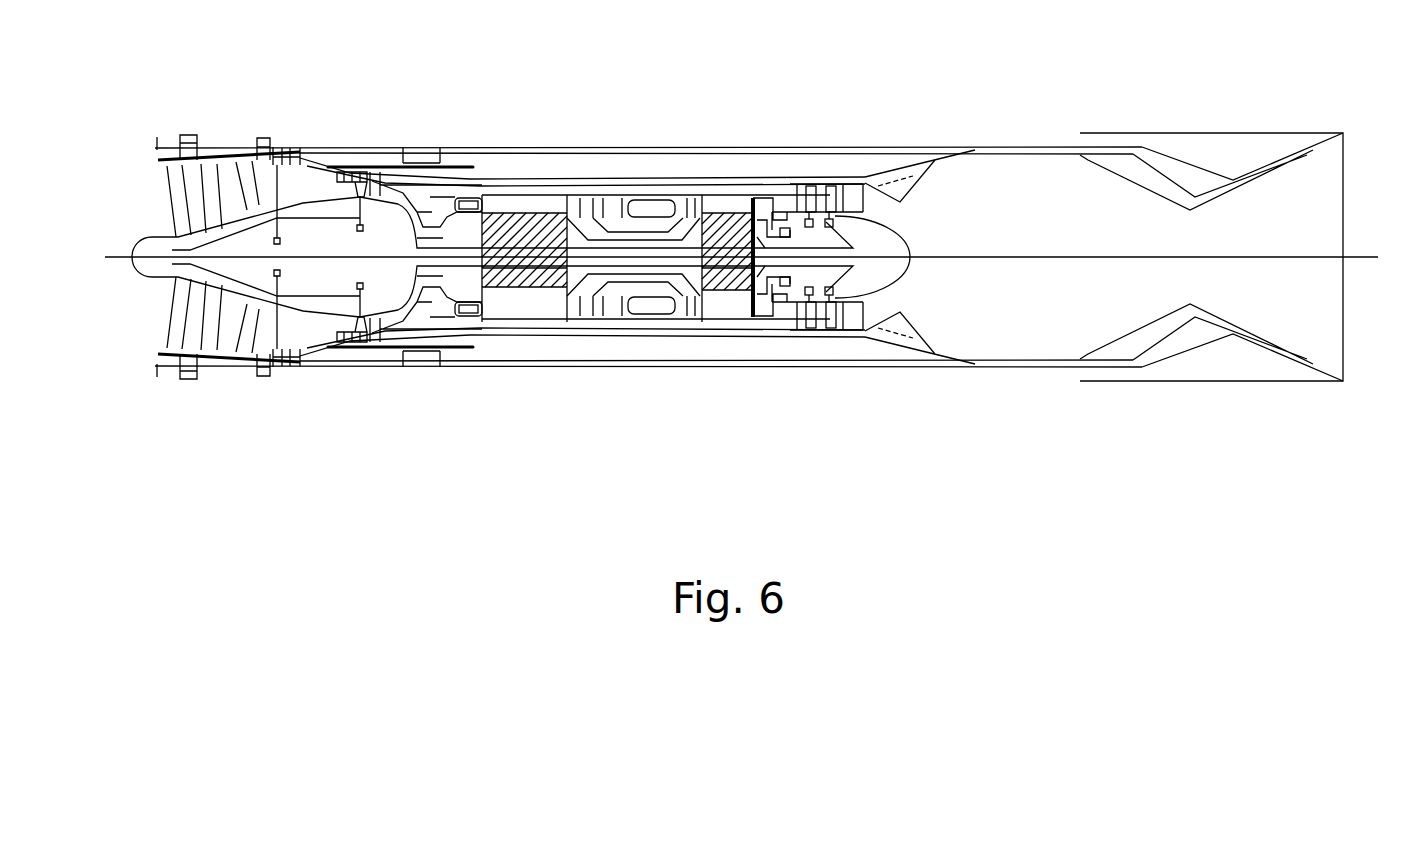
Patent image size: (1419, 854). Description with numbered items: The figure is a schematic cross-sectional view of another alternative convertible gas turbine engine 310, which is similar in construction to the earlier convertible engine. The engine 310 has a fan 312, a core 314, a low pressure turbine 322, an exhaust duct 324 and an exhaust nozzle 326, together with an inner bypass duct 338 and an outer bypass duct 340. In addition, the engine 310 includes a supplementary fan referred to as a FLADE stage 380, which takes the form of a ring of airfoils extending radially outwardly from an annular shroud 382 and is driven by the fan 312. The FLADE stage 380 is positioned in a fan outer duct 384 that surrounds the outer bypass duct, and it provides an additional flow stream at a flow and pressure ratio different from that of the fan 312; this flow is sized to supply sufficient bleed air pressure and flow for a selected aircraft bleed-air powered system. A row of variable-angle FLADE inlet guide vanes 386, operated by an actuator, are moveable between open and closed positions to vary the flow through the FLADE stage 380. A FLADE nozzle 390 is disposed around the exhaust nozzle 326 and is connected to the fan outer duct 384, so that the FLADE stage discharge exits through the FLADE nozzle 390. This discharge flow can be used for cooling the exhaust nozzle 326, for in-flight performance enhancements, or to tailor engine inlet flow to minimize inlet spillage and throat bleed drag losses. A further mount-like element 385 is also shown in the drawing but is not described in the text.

The convertible engine 310 is at (690, 105).
The fan 312 is at (214, 131).
The core 314 is at (755, 178).
The low pressure turbine 322 is at (817, 333).
The exhaust duct 324 is at (1020, 395).
The exhaust nozzle 326 is at (1367, 192).
The inner bypass duct 338 is at (472, 163).
The outer bypass duct 340 is at (430, 147).
The FLADE stage 380 is at (278, 146).
The annular shroud 382 is at (303, 152).
The fan outer duct 384 is at (392, 146).
The mount 385 is at (268, 383).
The variable-angle FLADE inlet guide vanes 386 is at (243, 372).
The FLADE nozzle 390 is at (1211, 149).